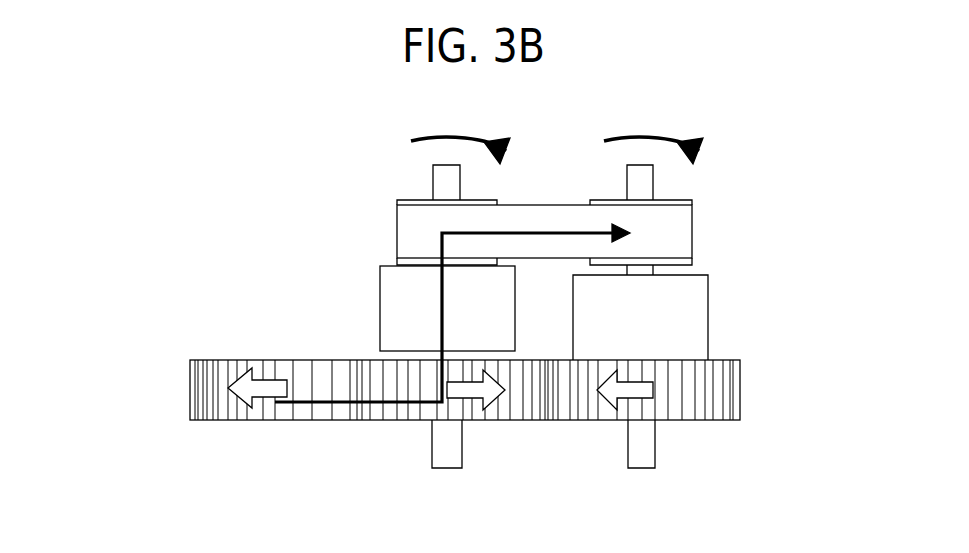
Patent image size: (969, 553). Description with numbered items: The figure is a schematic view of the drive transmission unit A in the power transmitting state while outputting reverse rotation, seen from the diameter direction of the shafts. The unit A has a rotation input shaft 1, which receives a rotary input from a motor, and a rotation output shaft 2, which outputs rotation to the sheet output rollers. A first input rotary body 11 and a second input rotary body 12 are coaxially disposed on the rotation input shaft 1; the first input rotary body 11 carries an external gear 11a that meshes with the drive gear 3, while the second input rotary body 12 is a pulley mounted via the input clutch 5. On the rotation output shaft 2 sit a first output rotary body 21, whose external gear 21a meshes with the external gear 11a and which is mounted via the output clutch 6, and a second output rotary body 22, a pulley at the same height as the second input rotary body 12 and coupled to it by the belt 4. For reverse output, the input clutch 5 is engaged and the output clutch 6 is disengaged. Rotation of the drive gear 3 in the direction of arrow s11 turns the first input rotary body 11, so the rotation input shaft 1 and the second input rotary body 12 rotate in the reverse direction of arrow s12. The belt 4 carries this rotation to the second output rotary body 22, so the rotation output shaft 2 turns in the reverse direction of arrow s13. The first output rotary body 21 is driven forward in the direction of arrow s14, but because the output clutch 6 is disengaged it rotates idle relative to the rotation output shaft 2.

The drive transmission unit A is at (262, 183).
The rotation input shaft 1 is at (442, 470).
The rotation output shaft 2 is at (643, 470).
The drive gear 3 is at (189, 392).
The belt 4 is at (552, 205).
The input clutch 5 is at (378, 307).
The output clutch 6 is at (710, 292).
The first input rotary body 11 is at (378, 422).
The external gear 11a is at (415, 410).
The second input rotary body 12 is at (405, 199).
The first output rotary body 21 is at (720, 422).
The external gear 21a is at (723, 388).
The second output rotary body 22 is at (687, 200).
The arrow s11 is at (253, 405).
The arrow s12 is at (473, 405).
The arrow s13 is at (699, 157).
The arrow s14 is at (612, 408).